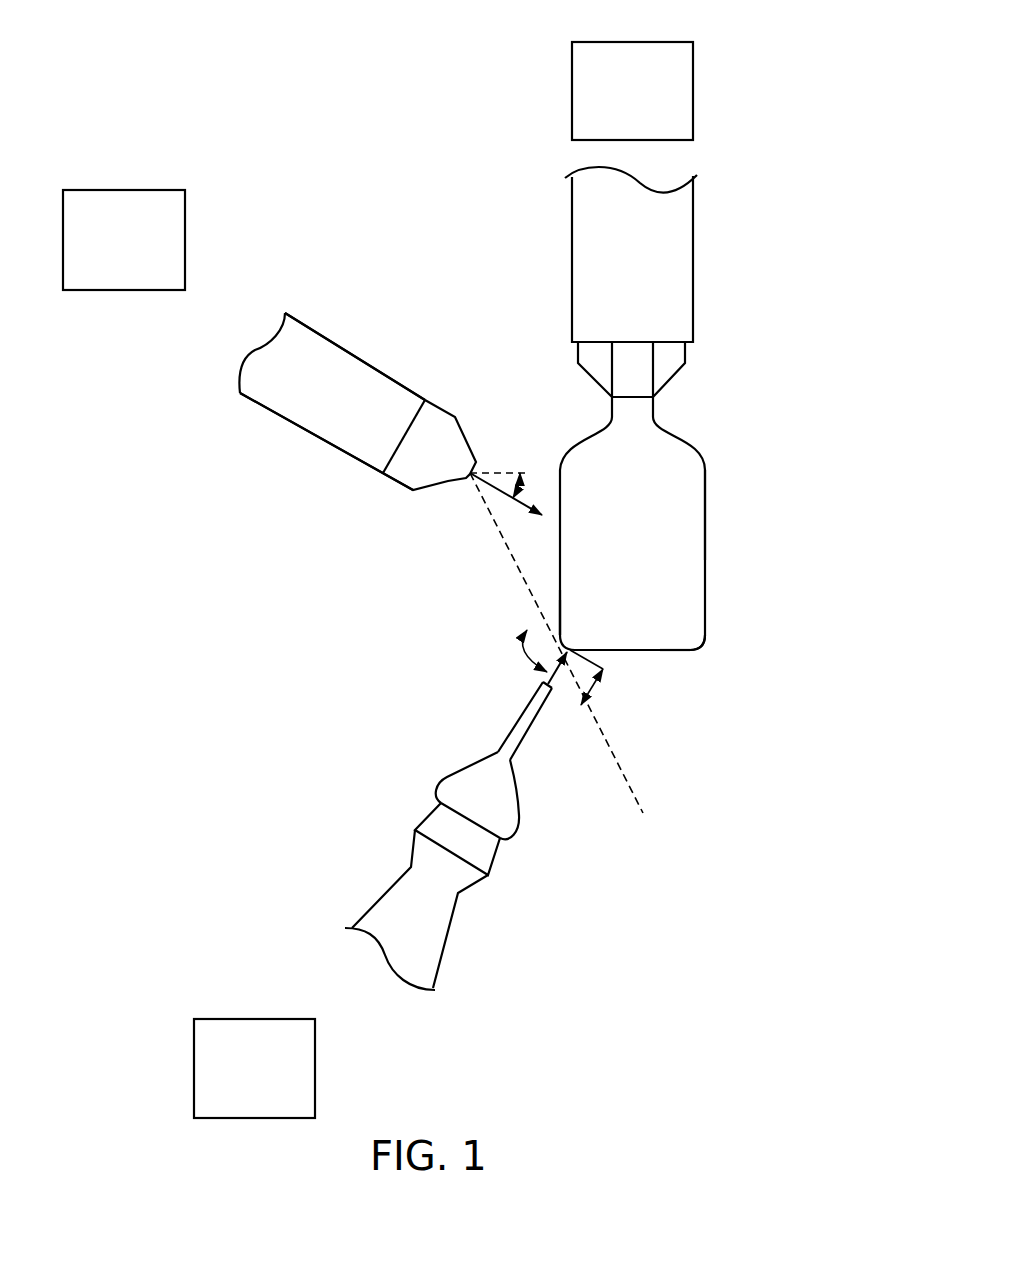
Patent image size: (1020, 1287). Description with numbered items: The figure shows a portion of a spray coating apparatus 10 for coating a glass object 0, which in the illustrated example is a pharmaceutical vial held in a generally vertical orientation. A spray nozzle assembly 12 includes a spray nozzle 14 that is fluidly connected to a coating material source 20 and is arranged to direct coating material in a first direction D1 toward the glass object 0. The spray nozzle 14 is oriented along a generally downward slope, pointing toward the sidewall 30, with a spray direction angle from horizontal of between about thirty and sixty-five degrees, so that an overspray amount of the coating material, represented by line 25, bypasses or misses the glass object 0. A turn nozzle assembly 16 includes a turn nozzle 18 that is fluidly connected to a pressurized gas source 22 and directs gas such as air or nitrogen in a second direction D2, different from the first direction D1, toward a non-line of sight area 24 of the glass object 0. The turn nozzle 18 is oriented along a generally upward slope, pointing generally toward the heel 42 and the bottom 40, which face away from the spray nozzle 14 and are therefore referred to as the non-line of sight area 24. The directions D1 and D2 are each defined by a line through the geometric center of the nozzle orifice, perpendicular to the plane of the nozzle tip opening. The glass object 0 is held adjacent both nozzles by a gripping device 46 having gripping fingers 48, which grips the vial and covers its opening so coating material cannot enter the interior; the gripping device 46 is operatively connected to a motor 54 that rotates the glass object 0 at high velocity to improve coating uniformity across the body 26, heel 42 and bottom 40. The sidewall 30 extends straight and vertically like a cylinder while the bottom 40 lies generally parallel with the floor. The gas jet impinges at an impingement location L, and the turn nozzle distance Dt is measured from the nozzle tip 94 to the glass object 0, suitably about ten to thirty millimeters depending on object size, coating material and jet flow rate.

The spray coating apparatus 10 is at (263, 95).
The spray nozzle assembly 12 is at (341, 331).
The spray nozzle 14 is at (305, 410).
The turn nozzle assembly 16 is at (420, 836).
The turn nozzle 18 is at (427, 932).
The coating material source 20 is at (121, 203).
The pressurized gas source 22 is at (251, 1031).
The non-line of sight area 24 is at (658, 661).
The overspray amount 25 is at (641, 800).
The body 26 is at (556, 613).
The sidewall 30 is at (705, 565).
The bottom 40 is at (681, 661).
The heel 42 is at (711, 653).
The gripping device 46 is at (700, 246).
The gripping fingers 48 is at (668, 370).
The glass object 0 is at (713, 483).
The motor 54 is at (693, 112).
The nozzle tip 94 is at (545, 690).
The impingement location L is at (570, 643).
The first direction D1 is at (495, 490).
The second direction D2 is at (553, 668).
The turn nozzle distance Dt is at (594, 682).